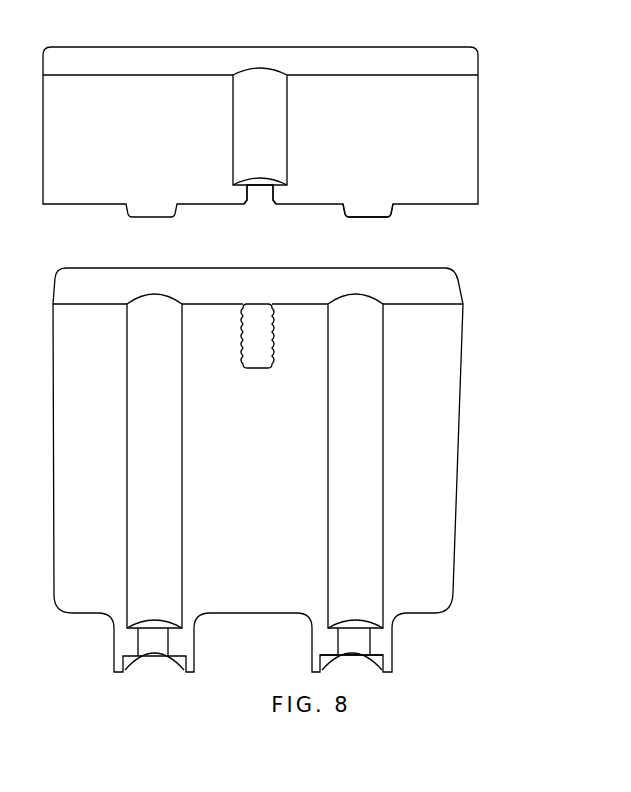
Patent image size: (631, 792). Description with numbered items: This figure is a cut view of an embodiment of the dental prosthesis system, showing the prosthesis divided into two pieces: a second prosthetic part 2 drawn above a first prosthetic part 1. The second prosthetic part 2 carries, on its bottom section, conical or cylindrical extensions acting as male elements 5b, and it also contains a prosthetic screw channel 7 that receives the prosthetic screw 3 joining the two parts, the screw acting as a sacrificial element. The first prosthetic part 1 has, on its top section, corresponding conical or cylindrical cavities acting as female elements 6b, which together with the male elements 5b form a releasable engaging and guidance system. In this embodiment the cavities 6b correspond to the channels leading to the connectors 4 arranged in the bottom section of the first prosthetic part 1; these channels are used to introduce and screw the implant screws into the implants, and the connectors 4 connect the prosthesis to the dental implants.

The first prosthetic part 1 is at (257, 477).
The second prosthetic part 2 is at (303, 110).
The prosthetic screw 3 is at (272, 320).
The connector 4 is at (383, 629).
The conical or cylindrical extension as male element 5b is at (363, 212).
The conical or cylindrical cavity as female element 6b is at (347, 427).
The prosthetic screw channel 7 is at (267, 163).